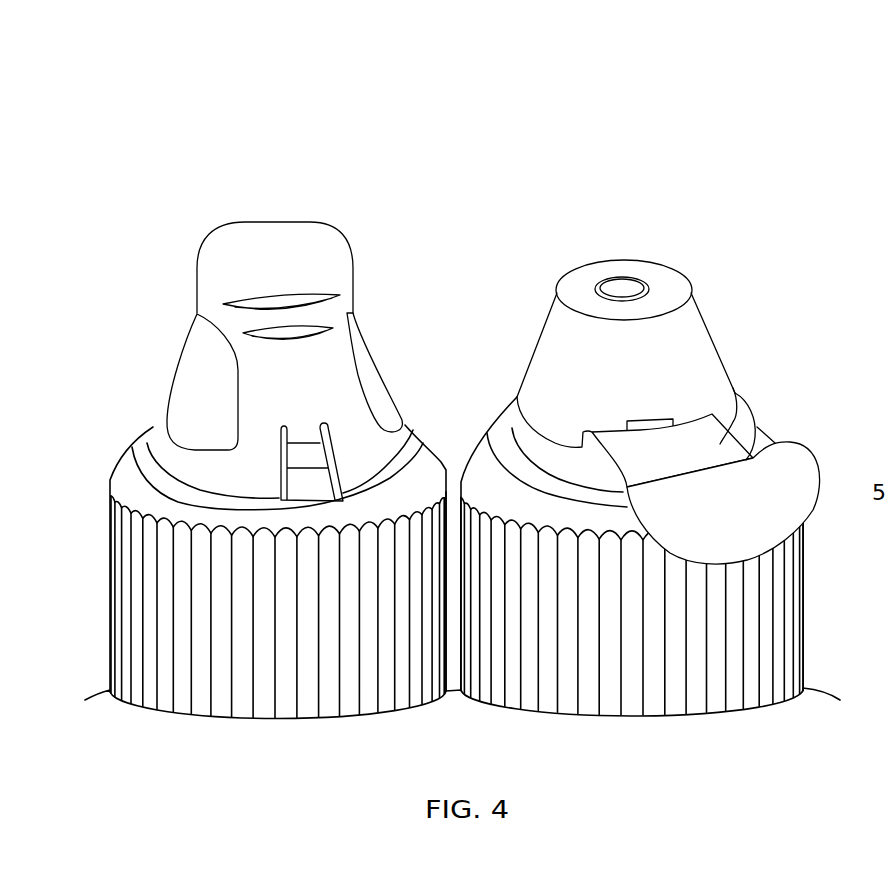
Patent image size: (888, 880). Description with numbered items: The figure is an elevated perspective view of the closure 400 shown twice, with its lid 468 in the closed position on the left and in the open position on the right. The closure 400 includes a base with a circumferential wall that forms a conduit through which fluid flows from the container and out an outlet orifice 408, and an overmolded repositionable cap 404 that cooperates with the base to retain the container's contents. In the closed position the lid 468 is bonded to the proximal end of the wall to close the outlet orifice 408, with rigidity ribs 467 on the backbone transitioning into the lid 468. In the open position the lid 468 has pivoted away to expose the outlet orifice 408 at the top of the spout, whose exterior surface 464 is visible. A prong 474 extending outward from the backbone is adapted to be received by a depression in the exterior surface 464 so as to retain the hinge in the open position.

The closure 400 is at (92, 158).
The overmolded repositionable cap 404 is at (722, 443).
The outlet orifice 408 is at (634, 276).
The exterior surface of the frustoconical wall 464 is at (187, 378).
The rigidity ribs 467 is at (343, 302).
The lid 468 is at (278, 232).
The prong 474 is at (308, 458).